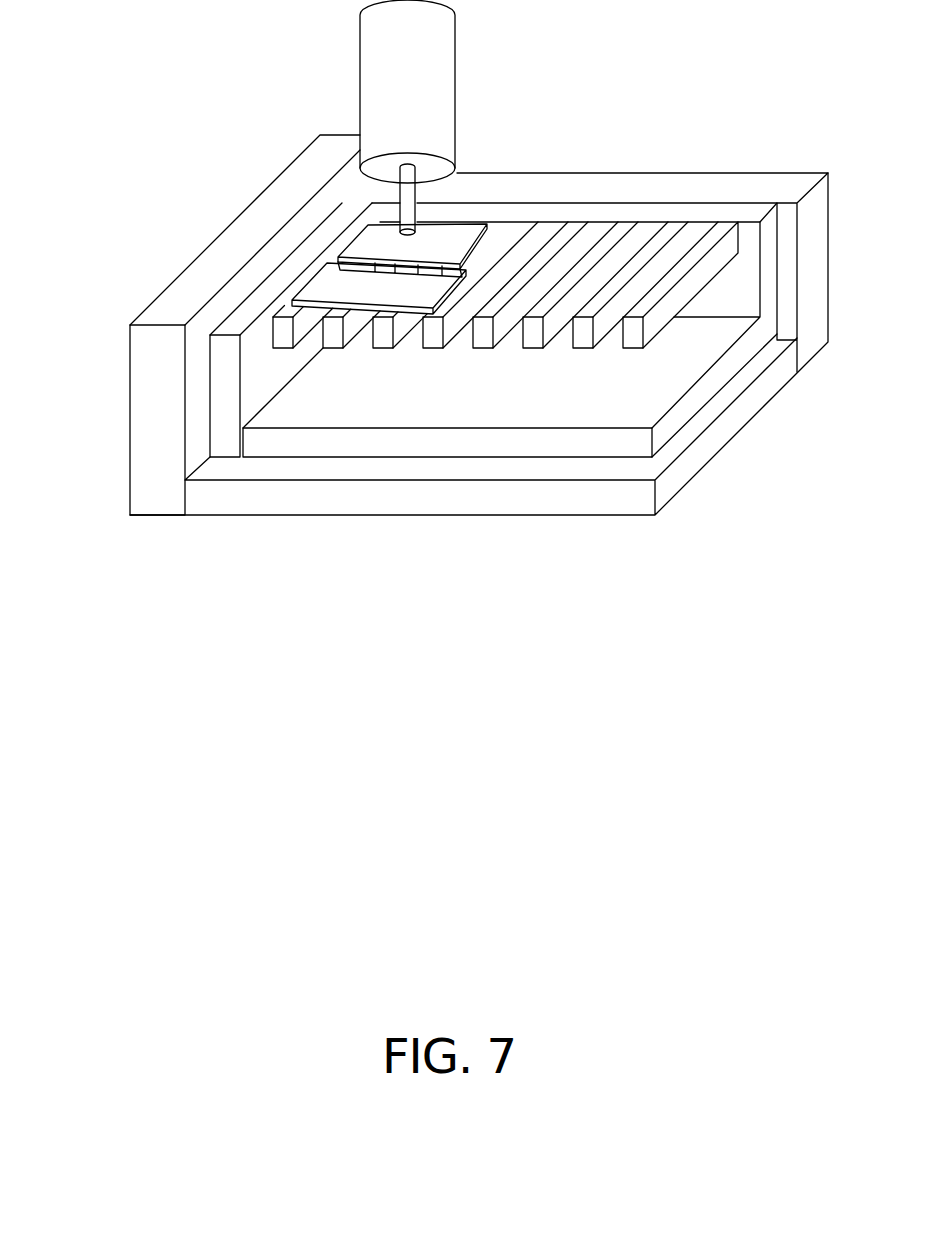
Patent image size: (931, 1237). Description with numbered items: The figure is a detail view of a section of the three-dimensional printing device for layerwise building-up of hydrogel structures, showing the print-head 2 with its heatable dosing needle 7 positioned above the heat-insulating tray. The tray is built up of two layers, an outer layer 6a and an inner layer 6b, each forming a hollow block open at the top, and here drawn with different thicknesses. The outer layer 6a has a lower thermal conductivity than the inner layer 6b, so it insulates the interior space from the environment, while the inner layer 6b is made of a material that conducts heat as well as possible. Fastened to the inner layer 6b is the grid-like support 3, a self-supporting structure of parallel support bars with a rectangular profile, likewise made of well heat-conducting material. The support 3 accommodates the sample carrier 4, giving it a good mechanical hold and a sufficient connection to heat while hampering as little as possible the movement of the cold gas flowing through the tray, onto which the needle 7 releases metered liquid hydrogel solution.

The print-head 2 is at (382, 80).
The heatable dosing needle 7 is at (408, 192).
The sample carrier 4 is at (483, 240).
The grid-like support 3 is at (565, 240).
The outer layer 6a is at (146, 371).
The inner layer 6b is at (328, 447).